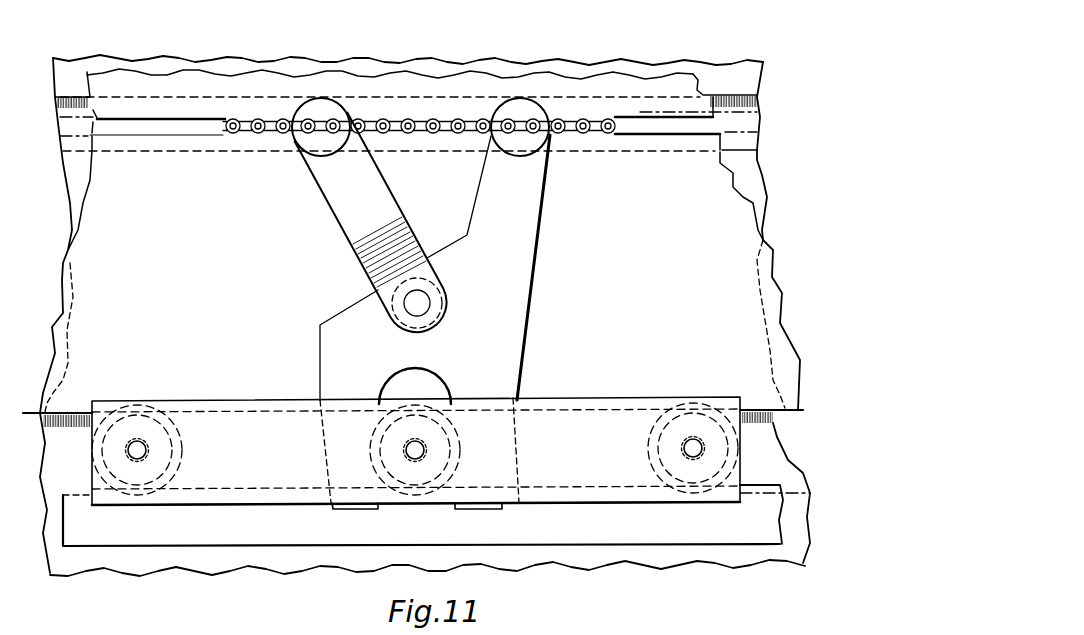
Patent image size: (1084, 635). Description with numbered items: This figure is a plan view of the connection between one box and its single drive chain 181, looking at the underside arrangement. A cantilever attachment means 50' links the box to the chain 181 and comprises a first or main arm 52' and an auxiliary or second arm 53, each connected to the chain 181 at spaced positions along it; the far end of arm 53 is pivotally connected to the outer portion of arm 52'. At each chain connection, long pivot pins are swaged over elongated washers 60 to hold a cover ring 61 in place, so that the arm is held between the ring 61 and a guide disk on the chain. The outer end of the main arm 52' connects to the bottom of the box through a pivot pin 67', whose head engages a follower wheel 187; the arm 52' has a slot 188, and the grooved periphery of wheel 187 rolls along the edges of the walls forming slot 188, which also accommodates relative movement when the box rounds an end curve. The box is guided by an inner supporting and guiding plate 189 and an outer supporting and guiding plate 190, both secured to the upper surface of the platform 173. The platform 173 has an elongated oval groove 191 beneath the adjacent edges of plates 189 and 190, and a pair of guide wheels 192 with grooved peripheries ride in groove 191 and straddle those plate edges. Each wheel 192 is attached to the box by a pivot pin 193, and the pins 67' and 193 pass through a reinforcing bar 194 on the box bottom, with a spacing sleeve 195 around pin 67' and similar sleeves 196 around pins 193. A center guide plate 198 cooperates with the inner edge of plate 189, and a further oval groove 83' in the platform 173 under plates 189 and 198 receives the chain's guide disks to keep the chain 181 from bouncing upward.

The cantilever attachment means 50' is at (561, 280).
The main arm 52' is at (442, 267).
The auxiliary arm 53 is at (333, 212).
The elongated washer 60 is at (508, 120).
The cover ring 61 is at (323, 107).
The pivot pin 67' is at (381, 451).
The oval groove 83' is at (761, 119).
The platform 173 is at (648, 567).
The chain 181 is at (583, 130).
The follower wheel 187 is at (415, 497).
The slot 188 is at (399, 371).
The inner supporting and guiding plate 189 is at (777, 293).
The outer supporting and guiding plate 190 is at (768, 532).
The elongated oval groove 191 is at (68, 413).
The guide wheel 192 is at (177, 432).
The pivot pin 193 is at (143, 457).
The reinforcing bar 194 is at (642, 398).
The spacing sleeve 195 is at (440, 442).
The spacing sleeve 196 is at (150, 447).
The center guide plate 198 is at (685, 90).